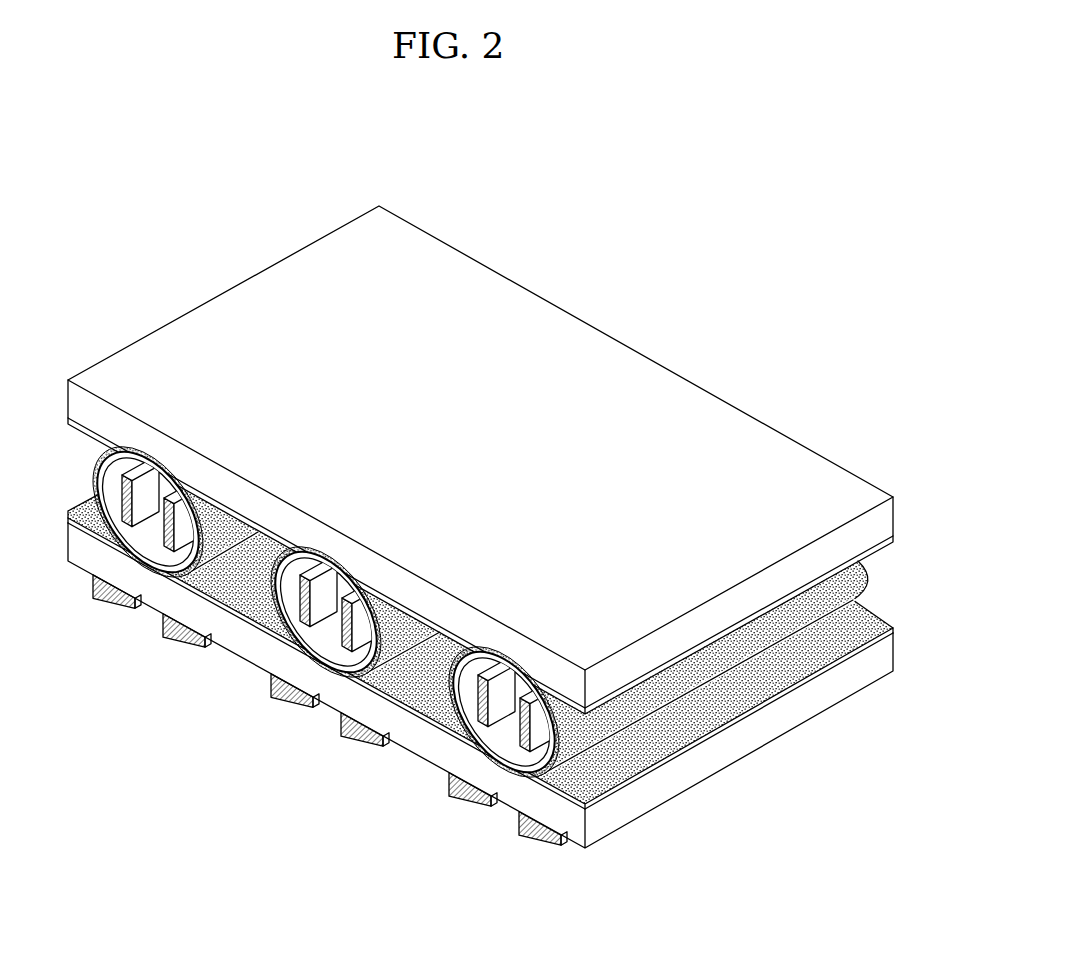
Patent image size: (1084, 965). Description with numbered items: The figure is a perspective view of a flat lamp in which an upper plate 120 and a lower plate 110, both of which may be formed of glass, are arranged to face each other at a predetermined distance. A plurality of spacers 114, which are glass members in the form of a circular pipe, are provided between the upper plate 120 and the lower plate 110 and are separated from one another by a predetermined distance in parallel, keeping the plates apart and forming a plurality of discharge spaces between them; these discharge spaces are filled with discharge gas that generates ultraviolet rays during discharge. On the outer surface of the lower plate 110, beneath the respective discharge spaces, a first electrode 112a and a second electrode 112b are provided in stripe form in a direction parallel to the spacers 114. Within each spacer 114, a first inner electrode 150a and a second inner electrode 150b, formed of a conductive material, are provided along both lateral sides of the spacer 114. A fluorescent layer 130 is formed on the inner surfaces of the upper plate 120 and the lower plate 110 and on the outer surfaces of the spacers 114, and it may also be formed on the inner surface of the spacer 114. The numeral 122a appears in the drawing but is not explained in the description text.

The lower plate 110 is at (583, 835).
The first electrode 112a is at (456, 790).
The second electrode 112b is at (373, 750).
The spacer 114 is at (338, 672).
The upper plate 120 is at (866, 526).
The electrode pad 122a is at (302, 690).
The fluorescent layer 130 is at (426, 722).
The first inner electrode 150a is at (307, 578).
The second inner electrode 150b is at (352, 600).